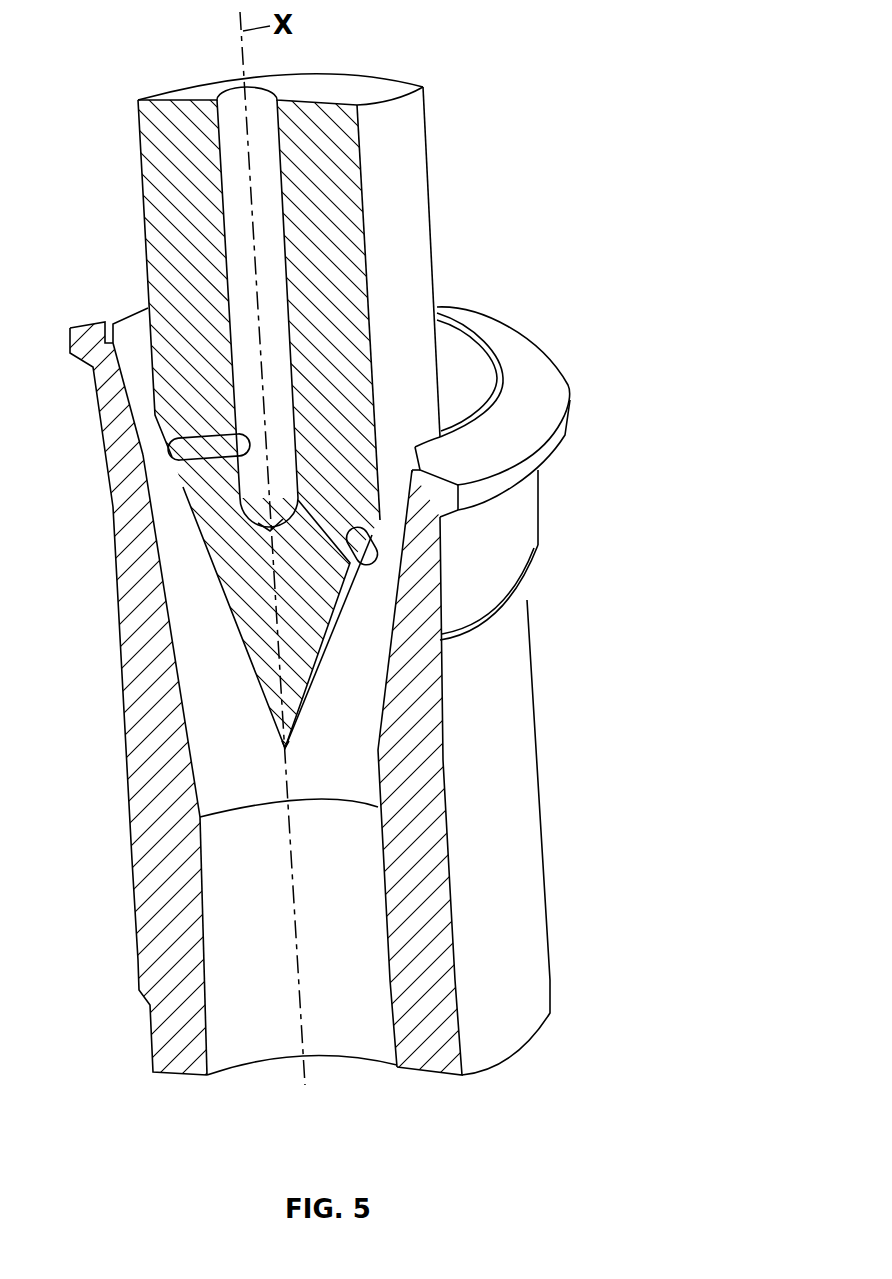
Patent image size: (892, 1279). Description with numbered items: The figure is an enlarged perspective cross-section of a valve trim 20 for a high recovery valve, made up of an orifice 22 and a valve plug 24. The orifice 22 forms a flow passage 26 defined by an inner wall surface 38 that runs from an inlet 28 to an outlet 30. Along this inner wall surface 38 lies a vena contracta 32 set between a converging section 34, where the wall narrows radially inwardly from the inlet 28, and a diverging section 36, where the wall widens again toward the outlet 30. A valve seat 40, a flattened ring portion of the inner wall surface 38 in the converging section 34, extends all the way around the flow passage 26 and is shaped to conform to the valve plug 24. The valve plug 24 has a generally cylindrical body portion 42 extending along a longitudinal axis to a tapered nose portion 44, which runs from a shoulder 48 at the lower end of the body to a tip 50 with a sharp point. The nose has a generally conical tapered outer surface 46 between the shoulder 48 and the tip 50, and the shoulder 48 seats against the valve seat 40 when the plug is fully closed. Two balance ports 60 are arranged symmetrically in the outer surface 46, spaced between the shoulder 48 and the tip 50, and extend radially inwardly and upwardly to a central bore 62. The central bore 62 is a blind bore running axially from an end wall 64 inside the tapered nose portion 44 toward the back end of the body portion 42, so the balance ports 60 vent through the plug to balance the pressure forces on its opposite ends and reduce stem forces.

The valve trim 20 is at (408, 40).
The orifice 22 is at (510, 1018).
The valve plug 24 is at (428, 134).
The flow passage 26 is at (360, 908).
The inlet 28 is at (463, 310).
The outlet 30 is at (338, 1057).
The vena contracta 32 is at (227, 805).
The converging section 34 is at (160, 441).
The diverging section 36 is at (237, 1007).
The inner wall surface 38 is at (462, 378).
The valve seat 40 is at (180, 553).
The body portion 42 is at (170, 191).
The tapered nose portion 44 is at (267, 650).
The tapered outer surface 46 is at (340, 622).
The shoulder 48 is at (383, 498).
The tip 50 is at (288, 745).
The balance port 60 is at (187, 472).
The central bore 62 is at (233, 110).
The end wall 64 is at (283, 525).